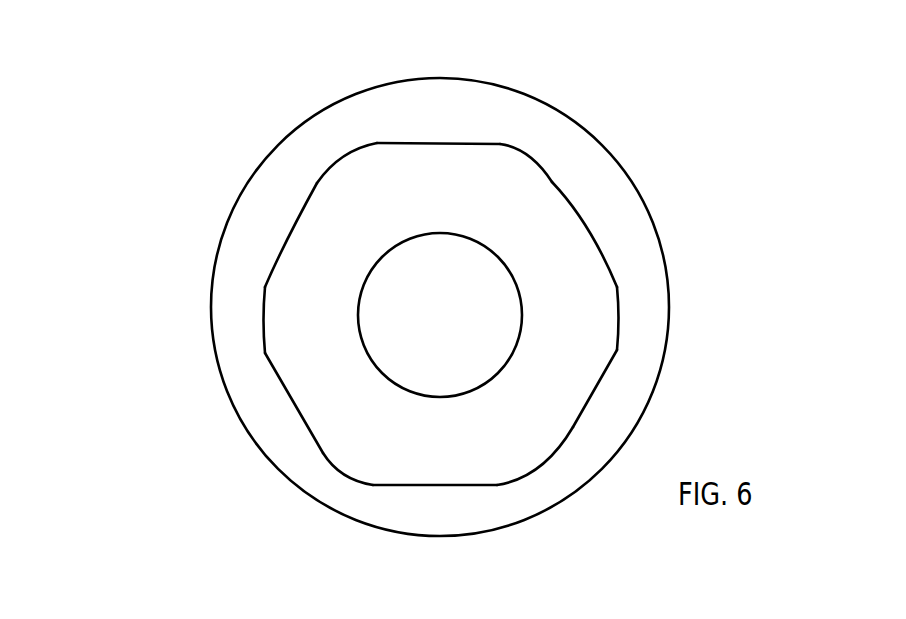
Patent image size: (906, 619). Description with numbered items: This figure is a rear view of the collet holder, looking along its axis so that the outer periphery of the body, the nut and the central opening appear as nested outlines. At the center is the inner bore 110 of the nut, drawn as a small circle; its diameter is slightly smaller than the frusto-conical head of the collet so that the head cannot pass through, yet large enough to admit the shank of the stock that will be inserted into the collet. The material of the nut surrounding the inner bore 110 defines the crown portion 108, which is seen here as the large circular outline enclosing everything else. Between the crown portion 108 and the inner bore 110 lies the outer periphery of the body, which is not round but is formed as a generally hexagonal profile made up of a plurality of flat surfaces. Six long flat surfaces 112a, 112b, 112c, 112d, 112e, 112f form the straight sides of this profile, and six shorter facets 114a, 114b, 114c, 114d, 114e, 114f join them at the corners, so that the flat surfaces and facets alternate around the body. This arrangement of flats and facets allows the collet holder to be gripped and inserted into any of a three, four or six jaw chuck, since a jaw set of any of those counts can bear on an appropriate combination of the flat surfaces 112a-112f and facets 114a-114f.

The crown portion 108 is at (290, 157).
The inner bore 110 is at (455, 327).
The flat surface 112a is at (452, 143).
The flat surface 112b is at (587, 228).
The flat surface 112c is at (587, 402).
The flat surface 112d is at (437, 487).
The flat surface 112e is at (293, 403).
The flat surface 112f is at (290, 235).
The facet 114a is at (533, 161).
The facet 114b is at (617, 317).
The facet 114c is at (537, 472).
The facet 114d is at (340, 471).
The facet 114e is at (263, 320).
The facet 114f is at (348, 157).